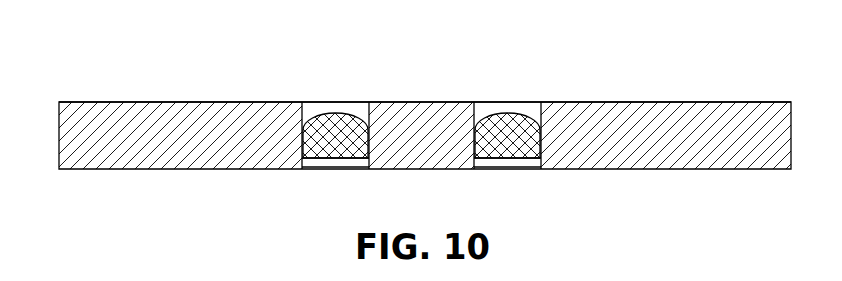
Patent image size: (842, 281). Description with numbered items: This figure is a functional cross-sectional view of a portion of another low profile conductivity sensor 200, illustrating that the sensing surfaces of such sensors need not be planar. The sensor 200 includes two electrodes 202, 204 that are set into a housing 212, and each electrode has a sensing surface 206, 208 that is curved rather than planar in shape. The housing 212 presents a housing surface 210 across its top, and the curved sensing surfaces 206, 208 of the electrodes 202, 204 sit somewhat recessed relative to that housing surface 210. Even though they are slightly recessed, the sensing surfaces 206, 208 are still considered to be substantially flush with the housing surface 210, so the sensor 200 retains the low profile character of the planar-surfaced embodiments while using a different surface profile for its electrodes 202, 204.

The low profile conductivity sensor 200 is at (85, 80).
The electrode 202 is at (330, 112).
The electrode 204 is at (500, 112).
The sensing surface 206 is at (347, 112).
The sensing surface 208 is at (520, 112).
The housing surface 210 is at (583, 102).
The housing 212 is at (212, 102).